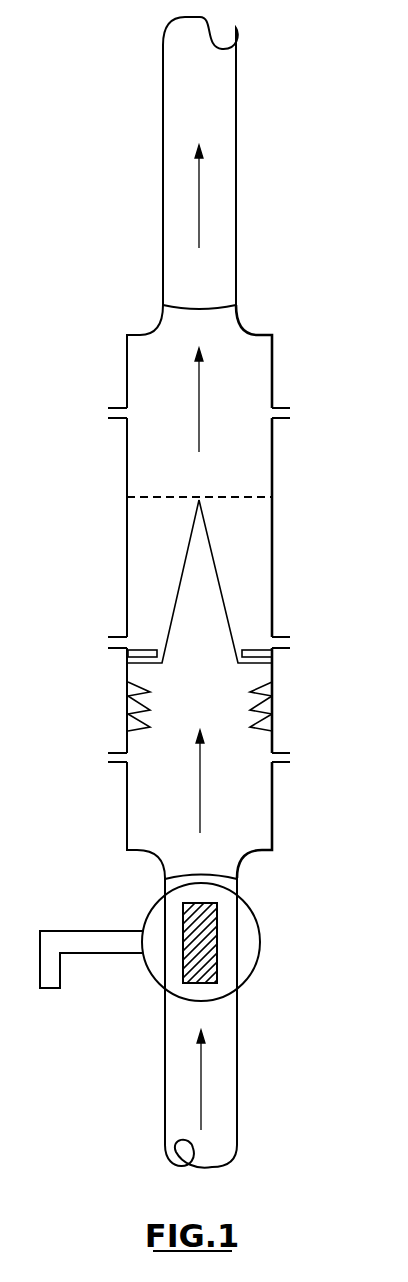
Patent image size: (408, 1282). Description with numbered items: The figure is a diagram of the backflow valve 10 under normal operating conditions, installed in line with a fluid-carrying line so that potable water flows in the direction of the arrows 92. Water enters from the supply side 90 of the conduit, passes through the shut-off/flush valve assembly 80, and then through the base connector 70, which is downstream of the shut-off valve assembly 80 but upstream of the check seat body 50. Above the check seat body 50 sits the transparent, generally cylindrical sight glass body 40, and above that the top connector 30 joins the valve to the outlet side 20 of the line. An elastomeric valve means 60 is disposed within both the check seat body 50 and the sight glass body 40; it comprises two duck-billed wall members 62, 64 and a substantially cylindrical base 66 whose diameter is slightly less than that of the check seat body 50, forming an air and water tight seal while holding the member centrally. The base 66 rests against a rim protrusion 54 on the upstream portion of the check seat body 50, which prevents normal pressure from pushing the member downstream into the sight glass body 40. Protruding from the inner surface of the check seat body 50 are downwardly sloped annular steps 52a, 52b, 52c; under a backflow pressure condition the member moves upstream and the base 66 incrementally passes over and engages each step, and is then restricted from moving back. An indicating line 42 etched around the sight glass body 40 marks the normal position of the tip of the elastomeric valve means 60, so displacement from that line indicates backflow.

The backflow valve 10 is at (68, 139).
The outlet side 20 is at (236, 148).
The top connector 30 is at (272, 362).
The sight glass body 40 is at (272, 450).
The indicating line 42 is at (148, 500).
The check seat body 50 is at (272, 752).
The step 52a is at (127, 686).
The step 52b is at (127, 712).
The step 52c is at (127, 732).
The rim protrusion 54 is at (249, 653).
The elastomeric valve means 60 is at (199, 581).
The duck-billed wall member 62 is at (185, 565).
The duck-billed wall member 64 is at (223, 602).
The cylindrical base 66 is at (130, 663).
The base connector 70 is at (272, 818).
The shut-off/flush valve assembly 80 is at (256, 916).
The supply side 90 is at (237, 1082).
The arrows 92 is at (199, 205).